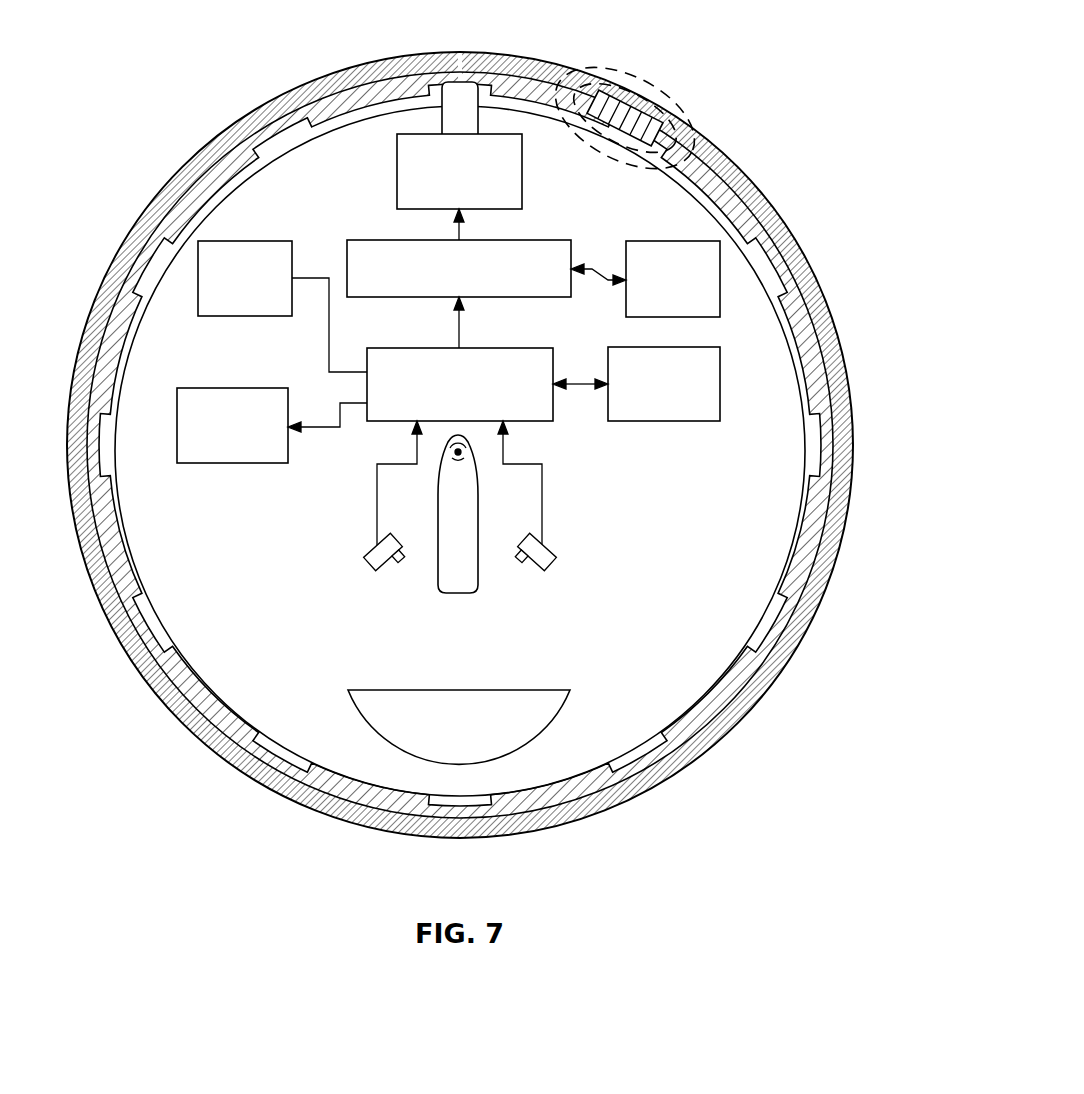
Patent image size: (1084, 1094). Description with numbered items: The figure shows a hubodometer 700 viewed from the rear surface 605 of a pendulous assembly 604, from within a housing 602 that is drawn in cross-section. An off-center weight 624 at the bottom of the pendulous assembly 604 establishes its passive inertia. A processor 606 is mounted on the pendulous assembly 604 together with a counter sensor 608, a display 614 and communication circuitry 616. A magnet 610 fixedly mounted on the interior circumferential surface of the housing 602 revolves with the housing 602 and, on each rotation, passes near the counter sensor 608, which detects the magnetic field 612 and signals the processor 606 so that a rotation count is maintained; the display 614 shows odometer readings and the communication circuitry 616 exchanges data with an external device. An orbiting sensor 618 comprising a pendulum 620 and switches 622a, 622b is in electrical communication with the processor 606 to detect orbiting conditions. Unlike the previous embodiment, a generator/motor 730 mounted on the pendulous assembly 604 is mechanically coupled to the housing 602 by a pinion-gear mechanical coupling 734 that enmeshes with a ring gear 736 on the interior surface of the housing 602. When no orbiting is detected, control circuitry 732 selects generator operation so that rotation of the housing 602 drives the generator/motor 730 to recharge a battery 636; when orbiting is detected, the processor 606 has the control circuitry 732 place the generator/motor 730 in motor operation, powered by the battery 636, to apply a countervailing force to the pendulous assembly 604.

The hubodometer 700 is at (196, 50).
The housing 602 is at (205, 745).
The pendulous assembly 604 is at (160, 555).
The rear surface 605 is at (773, 448).
The mechanical coupling 734 is at (456, 100).
The generator/motor 730 is at (397, 170).
The control circuitry 732 is at (407, 298).
The processor 606 is at (480, 338).
The counter sensor 608 is at (243, 316).
The battery 636 is at (626, 297).
The communication circuitry 616 is at (663, 421).
The display 614 is at (232, 463).
The orbiting sensor 618 is at (338, 494).
The pendulum 620 is at (458, 593).
The switch 622a is at (382, 573).
The switch 622b is at (538, 573).
The off-center weight 624 is at (537, 708).
The magnet 610 is at (627, 117).
The magnetic field 612 is at (702, 93).
The ring gear 736 is at (120, 320).